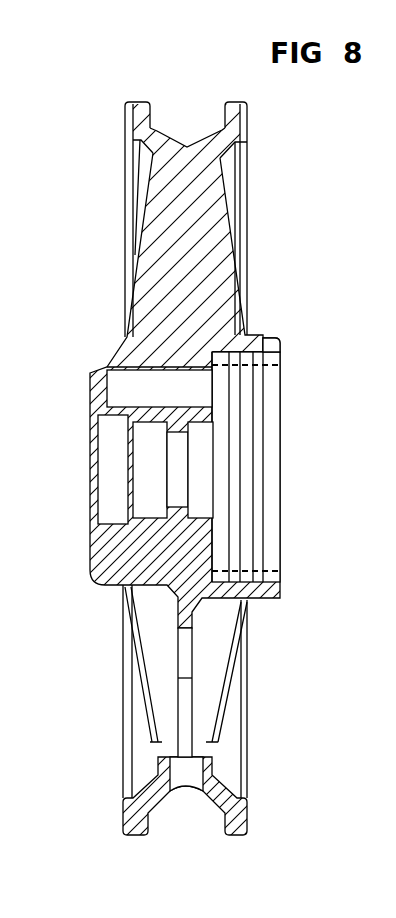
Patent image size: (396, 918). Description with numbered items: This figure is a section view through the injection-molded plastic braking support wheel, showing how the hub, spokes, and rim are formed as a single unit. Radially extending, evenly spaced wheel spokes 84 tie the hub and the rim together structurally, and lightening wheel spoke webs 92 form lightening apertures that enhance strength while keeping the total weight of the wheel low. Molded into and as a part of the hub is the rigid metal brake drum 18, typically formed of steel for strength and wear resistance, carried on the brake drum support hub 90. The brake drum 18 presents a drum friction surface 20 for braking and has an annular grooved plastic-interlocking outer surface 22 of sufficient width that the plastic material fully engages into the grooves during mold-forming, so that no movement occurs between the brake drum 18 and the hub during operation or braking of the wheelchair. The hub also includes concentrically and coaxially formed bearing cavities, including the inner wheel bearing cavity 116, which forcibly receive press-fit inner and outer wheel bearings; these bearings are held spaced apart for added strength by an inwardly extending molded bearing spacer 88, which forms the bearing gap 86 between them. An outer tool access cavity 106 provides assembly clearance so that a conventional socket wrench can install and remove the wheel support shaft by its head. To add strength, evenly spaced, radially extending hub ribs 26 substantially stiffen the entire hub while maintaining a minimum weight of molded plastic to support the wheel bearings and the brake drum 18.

The wheel spoke 84 is at (174, 147).
The grooved plastic-interlocking outer surface 22 is at (258, 340).
The drum friction surface 20 is at (272, 388).
The bearing spacer 88 is at (178, 424).
The outer tool access cavity 106 is at (113, 418).
The brake drum 18 is at (166, 421).
The inner wheel bearing cavity 116 is at (199, 428).
The bearing gap 86 is at (172, 482).
The hub rib 26 is at (153, 548).
The wheel spoke web 92 is at (178, 688).
The brake drum support hub 90 is at (247, 601).